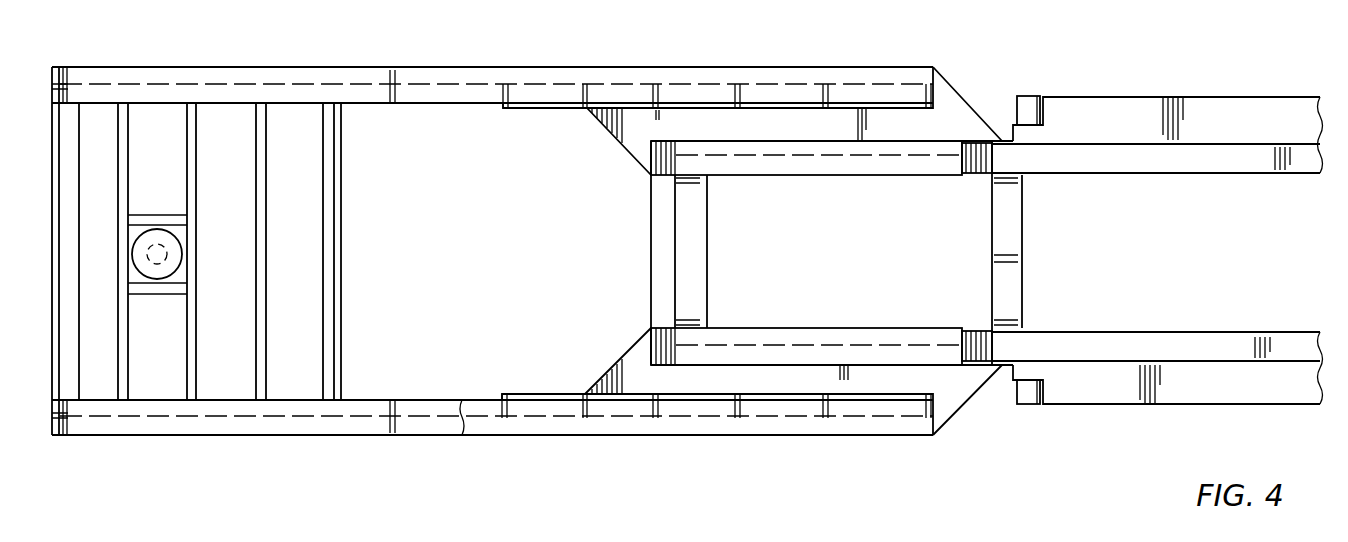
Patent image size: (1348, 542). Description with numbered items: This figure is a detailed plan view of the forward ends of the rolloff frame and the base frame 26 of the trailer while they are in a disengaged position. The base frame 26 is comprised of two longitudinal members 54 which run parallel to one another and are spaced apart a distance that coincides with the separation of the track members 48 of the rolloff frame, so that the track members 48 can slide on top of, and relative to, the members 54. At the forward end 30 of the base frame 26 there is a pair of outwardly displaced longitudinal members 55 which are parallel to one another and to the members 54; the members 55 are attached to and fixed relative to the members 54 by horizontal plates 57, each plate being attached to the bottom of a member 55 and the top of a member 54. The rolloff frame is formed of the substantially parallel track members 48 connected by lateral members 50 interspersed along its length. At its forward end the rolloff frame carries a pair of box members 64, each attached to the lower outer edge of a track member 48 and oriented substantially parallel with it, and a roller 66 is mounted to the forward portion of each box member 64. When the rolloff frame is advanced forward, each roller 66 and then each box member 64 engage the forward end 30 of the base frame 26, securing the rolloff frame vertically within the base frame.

The base frame 26 is at (833, 67).
The forward end 30 is at (533, 447).
The track members 48 is at (1293, 150).
The lateral members 50 is at (1018, 251).
The longitudinal members 54 is at (820, 168).
The outwardly displaced longitudinal members 55 is at (455, 75).
The horizontal plates 57 is at (623, 131).
The box members 64 is at (1106, 115).
The roller 66 is at (1026, 100).